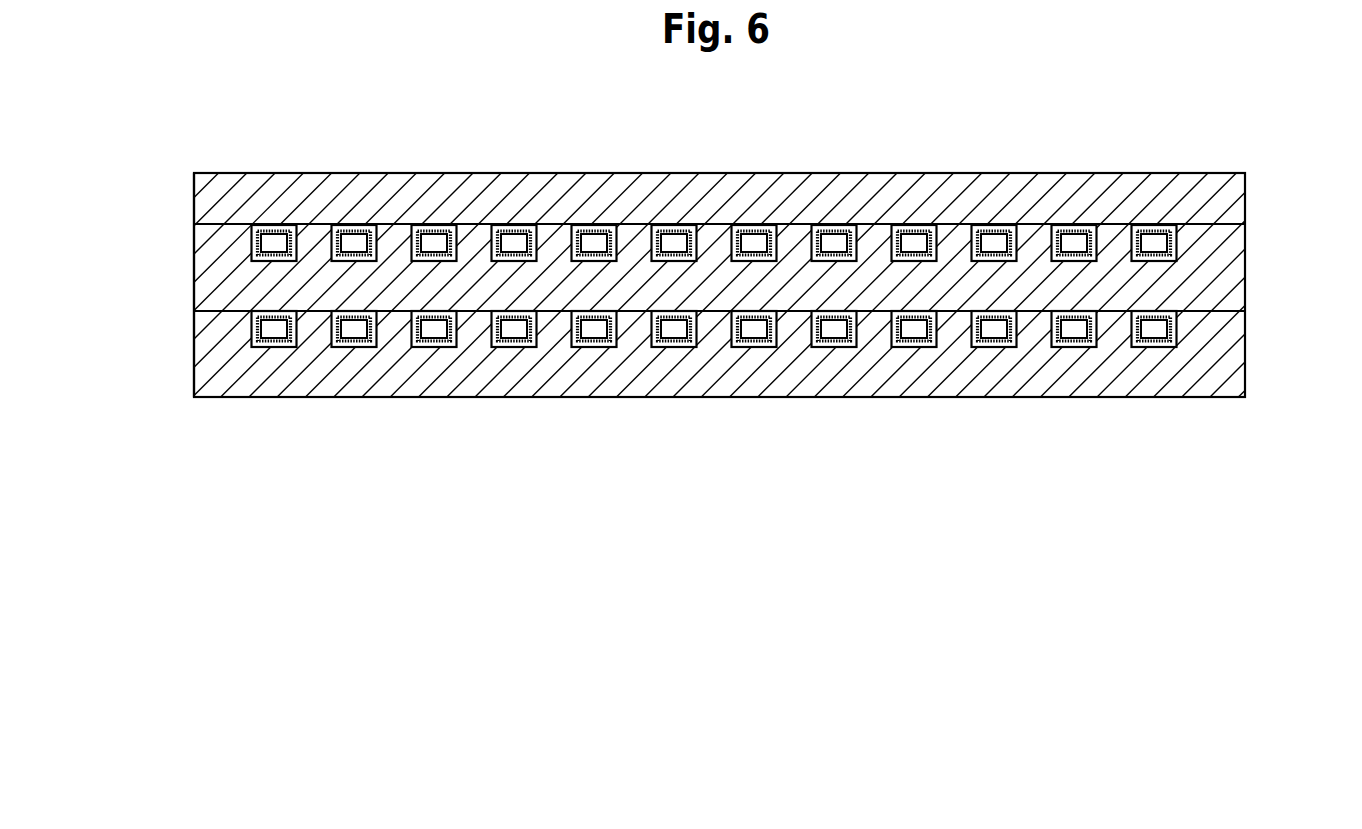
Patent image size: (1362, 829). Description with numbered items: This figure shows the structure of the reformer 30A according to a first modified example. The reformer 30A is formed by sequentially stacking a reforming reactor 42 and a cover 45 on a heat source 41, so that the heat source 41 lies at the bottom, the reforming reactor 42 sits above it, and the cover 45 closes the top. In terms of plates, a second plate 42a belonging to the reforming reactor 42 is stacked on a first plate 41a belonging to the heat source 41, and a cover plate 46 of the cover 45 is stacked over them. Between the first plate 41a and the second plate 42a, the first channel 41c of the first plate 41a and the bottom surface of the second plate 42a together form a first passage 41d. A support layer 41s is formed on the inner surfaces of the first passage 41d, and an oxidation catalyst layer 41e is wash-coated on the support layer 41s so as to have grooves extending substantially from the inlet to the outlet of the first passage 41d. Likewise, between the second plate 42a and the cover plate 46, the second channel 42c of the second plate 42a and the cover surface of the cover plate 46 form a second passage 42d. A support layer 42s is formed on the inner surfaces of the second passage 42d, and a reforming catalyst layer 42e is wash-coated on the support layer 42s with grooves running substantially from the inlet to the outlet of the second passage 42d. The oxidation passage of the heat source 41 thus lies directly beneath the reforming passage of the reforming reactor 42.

The reformer 30A is at (1262, 110).
The cover 45 is at (1277, 195).
The cover plate 46 is at (194, 193).
The reforming reactor 42 is at (1297, 270).
The second plate 42a is at (182, 272).
The reforming catalyst layer 42e is at (256, 230).
The support layer 42s is at (256, 251).
The second channel 42c is at (435, 262).
The second passage 42d is at (753, 264).
The heat source 41 is at (1297, 357).
The first plate 41a is at (182, 357).
The oxidation catalyst layer 41e is at (256, 316).
The support layer 41s is at (256, 338).
The first channel 41c is at (517, 348).
The first passage 41d is at (833, 349).